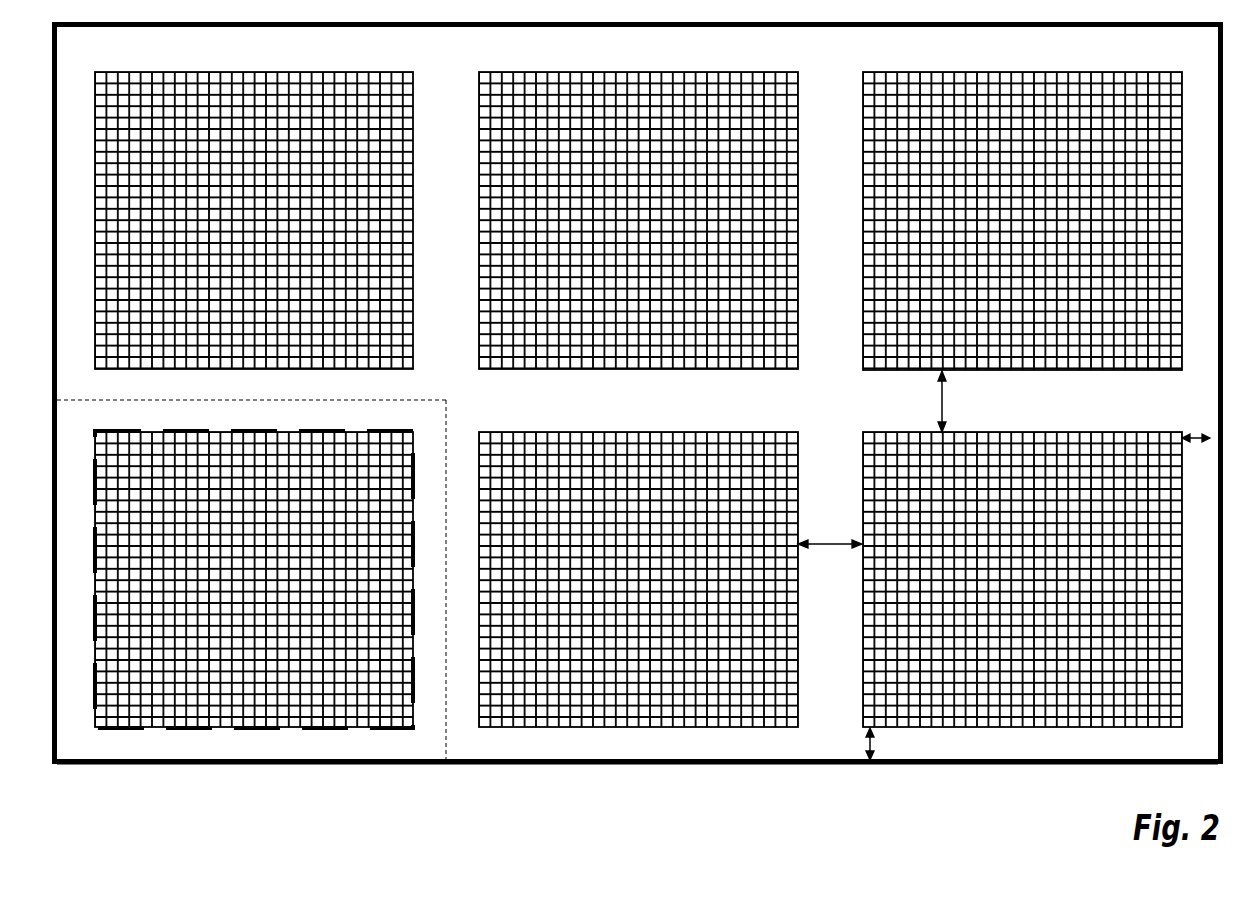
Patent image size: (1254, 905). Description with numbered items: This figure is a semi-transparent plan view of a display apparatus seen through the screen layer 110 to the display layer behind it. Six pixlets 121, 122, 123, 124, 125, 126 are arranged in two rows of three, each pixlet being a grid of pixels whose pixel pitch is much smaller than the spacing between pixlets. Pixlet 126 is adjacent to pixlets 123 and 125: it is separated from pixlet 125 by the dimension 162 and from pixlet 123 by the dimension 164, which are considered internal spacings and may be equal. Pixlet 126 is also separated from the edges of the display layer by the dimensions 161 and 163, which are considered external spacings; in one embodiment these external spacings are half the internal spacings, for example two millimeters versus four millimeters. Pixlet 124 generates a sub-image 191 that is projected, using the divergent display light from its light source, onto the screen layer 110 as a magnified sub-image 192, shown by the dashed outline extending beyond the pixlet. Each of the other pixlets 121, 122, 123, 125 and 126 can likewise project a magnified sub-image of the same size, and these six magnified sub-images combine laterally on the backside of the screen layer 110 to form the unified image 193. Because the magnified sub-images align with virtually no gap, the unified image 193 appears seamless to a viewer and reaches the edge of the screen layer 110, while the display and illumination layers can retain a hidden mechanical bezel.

The screen layer 110 is at (632, 416).
The pixlet 121 is at (276, 220).
The pixlet 122 is at (662, 220).
The pixlet 123 is at (1001, 221).
The pixlet 124 is at (254, 567).
The pixlet 125 is at (638, 565).
The pixlet 126 is at (1008, 567).
The dimension 161 is at (843, 742).
The dimension 162 is at (830, 554).
The dimension 163 is at (1185, 421).
The dimension 164 is at (965, 401).
The sub-image 191 is at (254, 611).
The magnified sub-image 192 is at (289, 572).
The unified image 193 is at (637, 783).